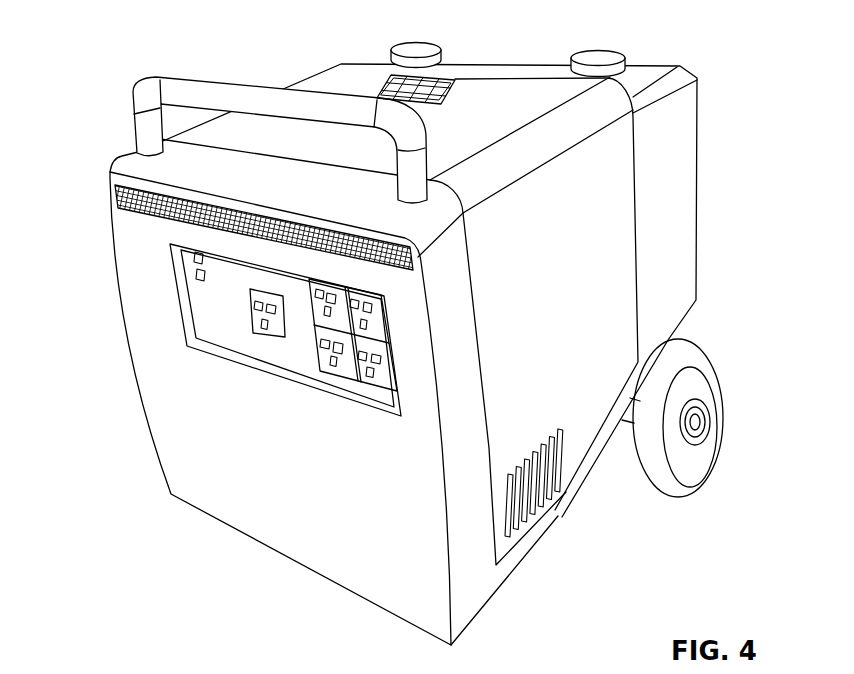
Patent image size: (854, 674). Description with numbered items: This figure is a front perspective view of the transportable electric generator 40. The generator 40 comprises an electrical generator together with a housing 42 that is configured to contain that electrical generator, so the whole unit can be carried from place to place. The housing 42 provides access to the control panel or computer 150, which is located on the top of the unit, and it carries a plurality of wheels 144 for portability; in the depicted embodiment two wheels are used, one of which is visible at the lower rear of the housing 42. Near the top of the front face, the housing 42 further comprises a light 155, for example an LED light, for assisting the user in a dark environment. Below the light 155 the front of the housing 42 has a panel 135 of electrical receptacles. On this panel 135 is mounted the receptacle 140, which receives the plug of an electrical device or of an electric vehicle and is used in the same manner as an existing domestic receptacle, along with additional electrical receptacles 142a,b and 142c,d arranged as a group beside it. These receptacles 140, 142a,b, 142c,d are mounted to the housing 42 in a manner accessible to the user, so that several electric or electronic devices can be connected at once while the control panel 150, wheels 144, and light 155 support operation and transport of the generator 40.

The transportable electric generator 40 is at (155, 36).
The housing 42 is at (130, 289).
The panel 135 is at (220, 327).
The receptacle 140 is at (257, 312).
The electrical receptacles 142a,b is at (348, 317).
The electrical receptacles 142c,d is at (374, 361).
The wheels 144 is at (692, 468).
The control panel or computer 150 is at (405, 90).
The light 155 is at (117, 190).